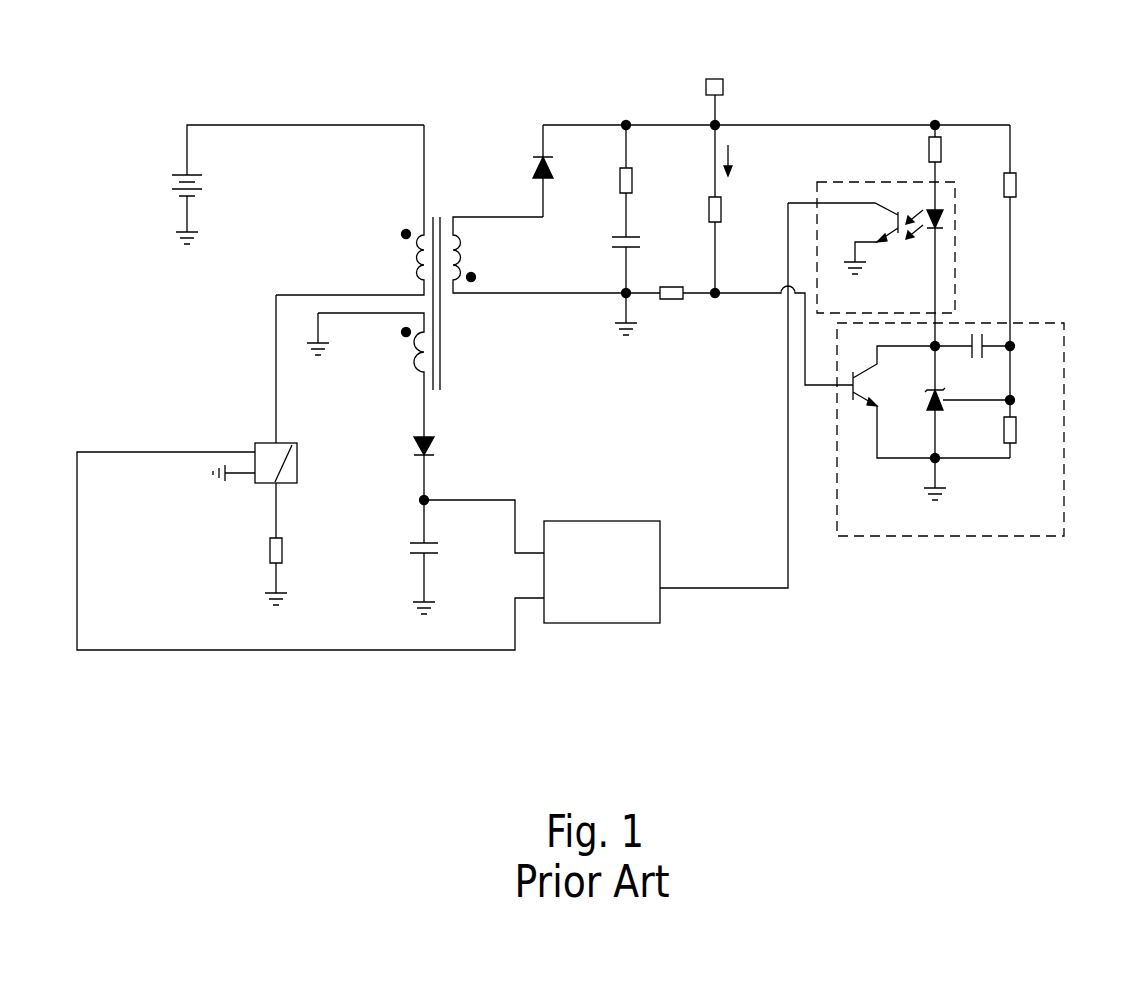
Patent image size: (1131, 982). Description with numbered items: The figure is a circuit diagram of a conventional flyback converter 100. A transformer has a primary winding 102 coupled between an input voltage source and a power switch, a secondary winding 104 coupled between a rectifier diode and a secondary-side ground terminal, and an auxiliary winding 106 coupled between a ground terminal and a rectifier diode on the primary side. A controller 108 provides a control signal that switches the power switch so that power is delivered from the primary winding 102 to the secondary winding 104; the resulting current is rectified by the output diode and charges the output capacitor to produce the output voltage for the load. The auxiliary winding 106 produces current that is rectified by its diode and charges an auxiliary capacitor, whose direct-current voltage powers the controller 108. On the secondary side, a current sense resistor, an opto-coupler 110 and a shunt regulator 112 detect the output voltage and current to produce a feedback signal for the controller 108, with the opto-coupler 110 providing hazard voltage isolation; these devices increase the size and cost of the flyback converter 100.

The flyback converter 100 is at (1052, 88).
The primary winding 102 is at (396, 241).
The secondary winding 104 is at (468, 238).
The auxiliary winding 106 is at (412, 377).
The controller 108 is at (600, 521).
The opto-coupler 110 is at (890, 181).
The shunt regulator 112 is at (1065, 423).